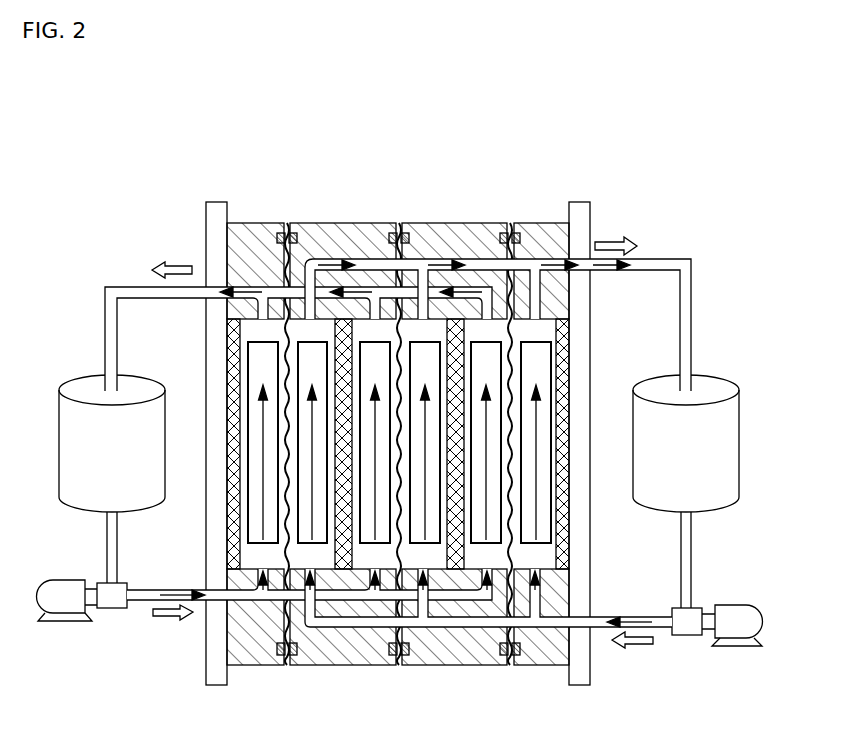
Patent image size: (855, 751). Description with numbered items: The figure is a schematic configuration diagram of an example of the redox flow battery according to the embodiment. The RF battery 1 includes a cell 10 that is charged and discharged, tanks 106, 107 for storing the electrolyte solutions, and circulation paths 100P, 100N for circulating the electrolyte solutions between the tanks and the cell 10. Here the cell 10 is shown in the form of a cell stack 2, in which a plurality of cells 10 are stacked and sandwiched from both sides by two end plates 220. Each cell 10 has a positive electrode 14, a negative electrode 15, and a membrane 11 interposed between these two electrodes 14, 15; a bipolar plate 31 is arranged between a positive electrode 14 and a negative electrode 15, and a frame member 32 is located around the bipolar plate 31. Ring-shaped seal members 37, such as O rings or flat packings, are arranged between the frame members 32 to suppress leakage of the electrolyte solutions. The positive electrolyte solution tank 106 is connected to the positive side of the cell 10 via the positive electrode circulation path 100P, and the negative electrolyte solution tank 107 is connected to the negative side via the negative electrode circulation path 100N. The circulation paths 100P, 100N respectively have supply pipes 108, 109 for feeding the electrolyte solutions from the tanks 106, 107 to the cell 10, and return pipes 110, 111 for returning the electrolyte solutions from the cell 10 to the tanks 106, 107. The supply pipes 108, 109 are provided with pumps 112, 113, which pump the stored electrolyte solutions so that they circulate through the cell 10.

The RF battery 1 is at (92, 121).
The cell stack 2 is at (578, 176).
The cell 10 is at (253, 568).
The membrane 11 is at (303, 568).
The positive electrode 14 is at (262, 515).
The negative electrode 15 is at (312, 522).
The bipolar plate 31 is at (238, 352).
The frame member 32 is at (248, 222).
The seal member 37 is at (293, 232).
The positive electrode circulation path 100P is at (259, 462).
The negative electrode circulation path 100N is at (524, 451).
The positive electrolyte solution tank 106 is at (76, 384).
The negative electrolyte solution tank 107 is at (724, 384).
The supply pipe 108 is at (147, 617).
The supply pipe 109 is at (662, 630).
The return pipe 110 is at (124, 286).
The return pipe 111 is at (677, 258).
The pump 112 is at (56, 588).
The pump 113 is at (737, 612).
The end plate 220 is at (212, 672).